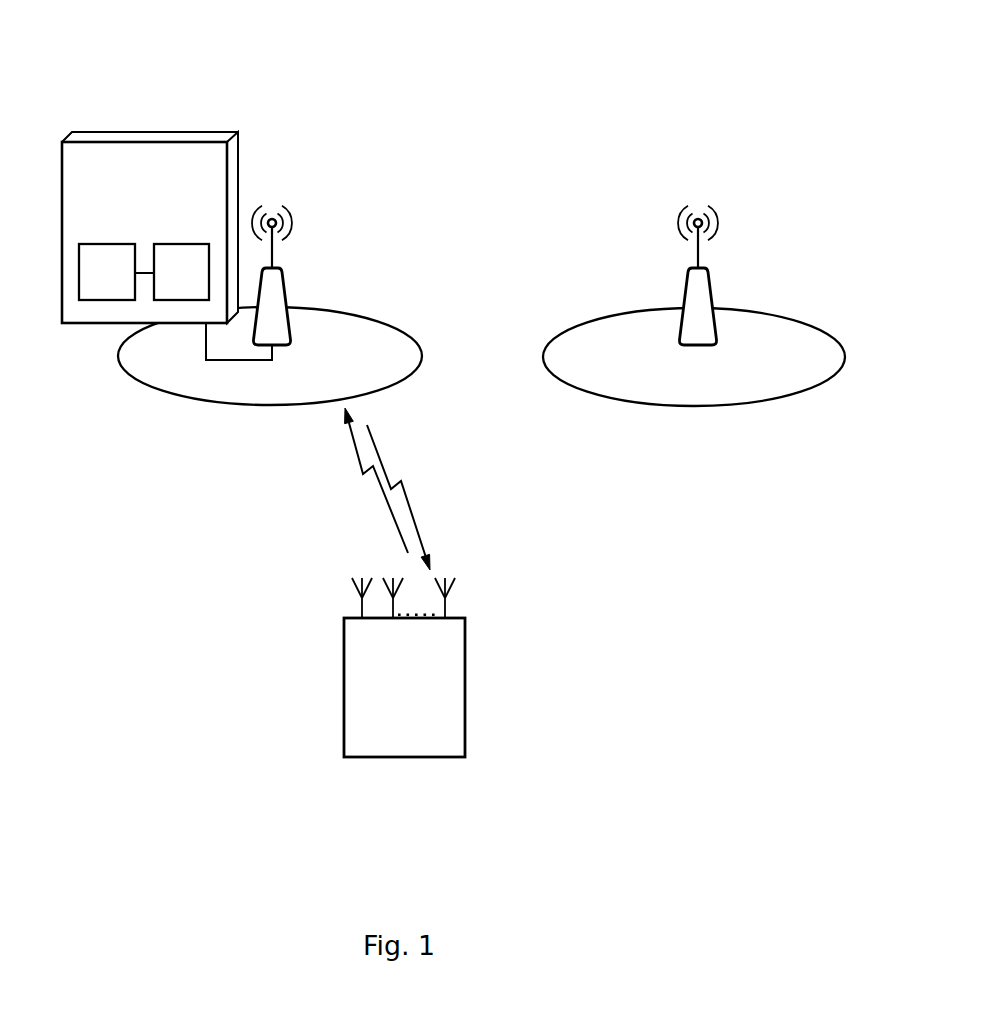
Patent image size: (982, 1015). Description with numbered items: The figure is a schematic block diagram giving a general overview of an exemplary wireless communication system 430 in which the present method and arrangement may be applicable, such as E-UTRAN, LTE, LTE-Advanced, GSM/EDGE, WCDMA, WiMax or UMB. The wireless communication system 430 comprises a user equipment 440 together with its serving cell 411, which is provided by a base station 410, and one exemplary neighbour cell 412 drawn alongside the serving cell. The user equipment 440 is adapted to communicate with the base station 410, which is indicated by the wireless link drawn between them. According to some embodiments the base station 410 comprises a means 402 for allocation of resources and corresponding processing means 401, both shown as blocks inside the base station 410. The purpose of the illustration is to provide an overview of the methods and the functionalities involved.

The wireless communication system 430 is at (586, 97).
The base station 410 is at (118, 186).
The processing means 401 is at (163, 286).
The means for allocation of resources 402 is at (85, 286).
The serving cell 411 is at (267, 406).
The neighbour cell 412 is at (660, 408).
The user equipment 440 is at (382, 669).